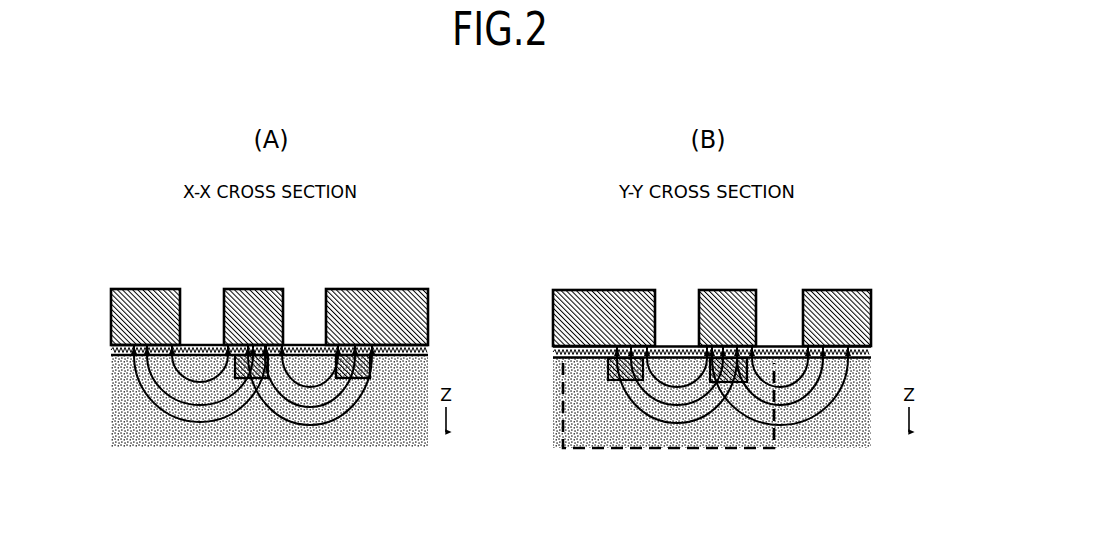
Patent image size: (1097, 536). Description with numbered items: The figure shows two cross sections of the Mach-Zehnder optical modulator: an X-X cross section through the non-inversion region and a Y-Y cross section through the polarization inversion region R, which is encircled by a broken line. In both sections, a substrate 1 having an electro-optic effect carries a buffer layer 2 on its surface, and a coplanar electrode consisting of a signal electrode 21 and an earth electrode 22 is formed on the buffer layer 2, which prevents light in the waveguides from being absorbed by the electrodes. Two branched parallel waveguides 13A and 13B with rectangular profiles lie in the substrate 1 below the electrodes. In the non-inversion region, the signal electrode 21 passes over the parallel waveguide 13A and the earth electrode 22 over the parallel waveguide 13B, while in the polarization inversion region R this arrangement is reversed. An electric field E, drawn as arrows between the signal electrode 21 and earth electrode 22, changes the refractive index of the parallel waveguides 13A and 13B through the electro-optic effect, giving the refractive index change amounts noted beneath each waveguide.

The substrate 1 is at (111, 415).
The buffer layer 2 is at (111, 350).
The signal electrode 21 is at (262, 289).
The earth electrode 22 is at (121, 289).
The parallel waveguide 13A is at (250, 378).
The parallel waveguide 13B is at (354, 378).
The electric field E is at (177, 432).
The polarization inversion region R is at (568, 448).